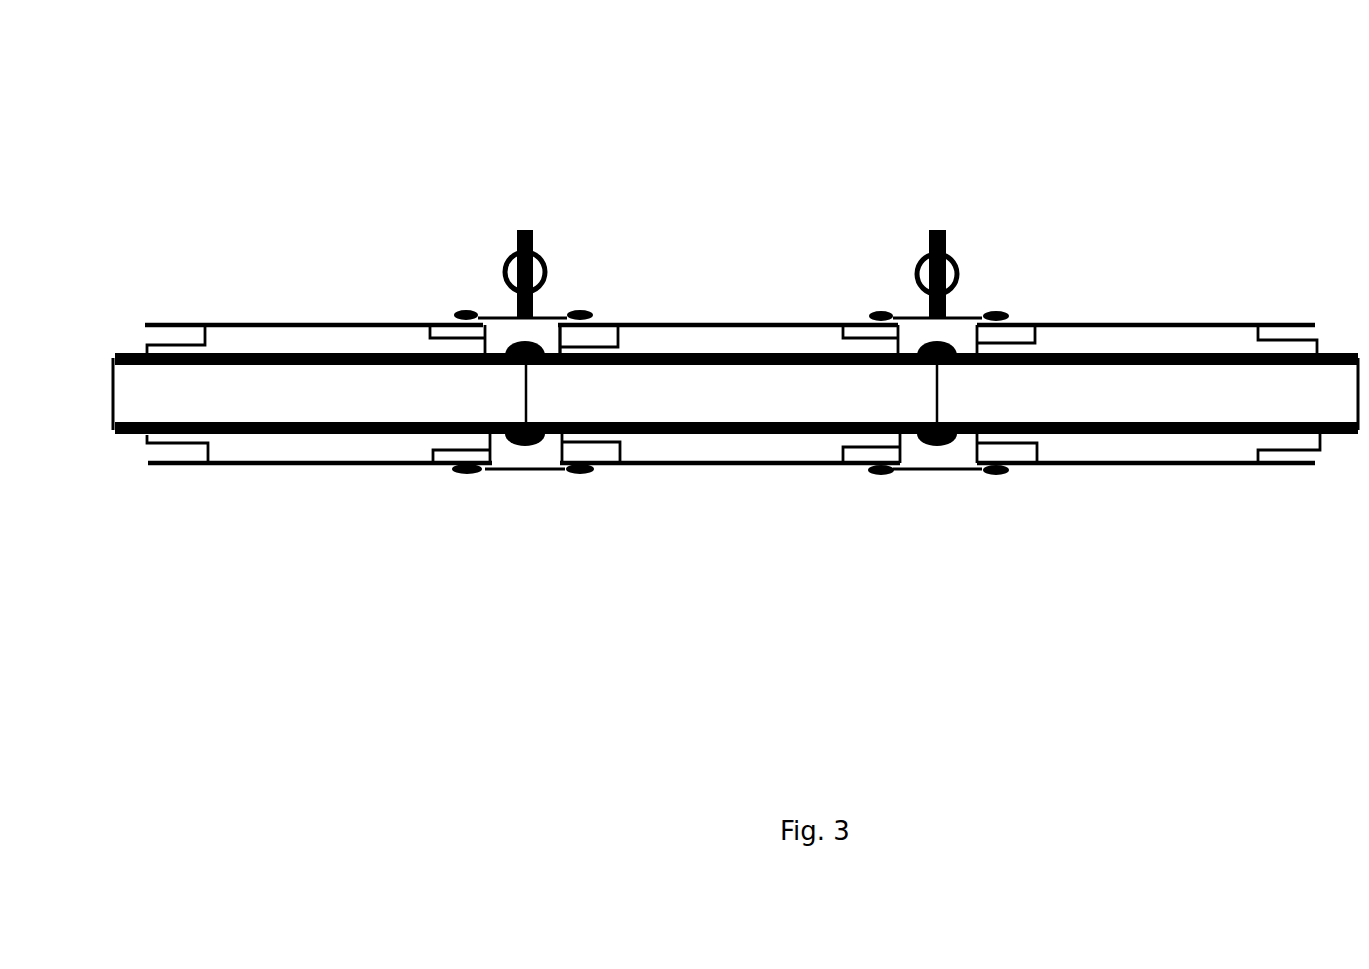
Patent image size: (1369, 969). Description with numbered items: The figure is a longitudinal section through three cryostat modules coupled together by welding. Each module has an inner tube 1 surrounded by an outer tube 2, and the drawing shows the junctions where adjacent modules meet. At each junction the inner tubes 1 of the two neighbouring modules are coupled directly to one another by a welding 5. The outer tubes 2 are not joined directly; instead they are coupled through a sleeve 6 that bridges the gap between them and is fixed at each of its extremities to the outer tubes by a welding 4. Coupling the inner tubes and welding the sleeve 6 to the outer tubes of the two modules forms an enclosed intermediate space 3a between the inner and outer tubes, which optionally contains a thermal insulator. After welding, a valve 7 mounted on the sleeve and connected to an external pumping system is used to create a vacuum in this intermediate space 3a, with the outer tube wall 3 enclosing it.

The inner tube 1 is at (308, 355).
The outer tube 2 is at (323, 457).
The upper outer plate 3 is at (382, 337).
The intermediate space 3a is at (545, 325).
The welding 4 is at (455, 310).
The welding 5 is at (513, 440).
The sleeve 6 is at (535, 470).
The valve 7 is at (535, 232).